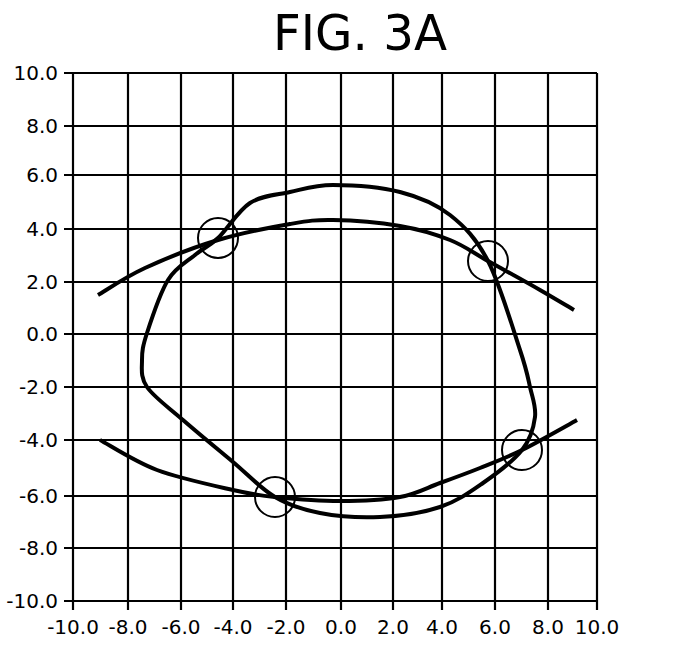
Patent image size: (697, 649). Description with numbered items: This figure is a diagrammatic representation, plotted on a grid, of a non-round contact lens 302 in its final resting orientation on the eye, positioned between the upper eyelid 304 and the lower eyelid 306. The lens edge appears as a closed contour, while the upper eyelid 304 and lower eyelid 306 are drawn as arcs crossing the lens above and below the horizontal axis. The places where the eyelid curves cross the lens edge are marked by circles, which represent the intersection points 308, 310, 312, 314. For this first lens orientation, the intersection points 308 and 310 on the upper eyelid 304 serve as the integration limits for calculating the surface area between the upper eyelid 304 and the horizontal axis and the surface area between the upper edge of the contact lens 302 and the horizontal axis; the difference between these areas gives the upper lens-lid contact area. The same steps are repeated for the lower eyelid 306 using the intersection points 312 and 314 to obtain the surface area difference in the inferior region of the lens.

The non-round contact lens 302 is at (157, 297).
The upper eyelid 304 is at (170, 255).
The lower eyelid 306 is at (158, 471).
The intersection point 308 is at (221, 256).
The intersection point 310 is at (509, 258).
The intersection point 312 is at (272, 517).
The intersection point 314 is at (530, 470).